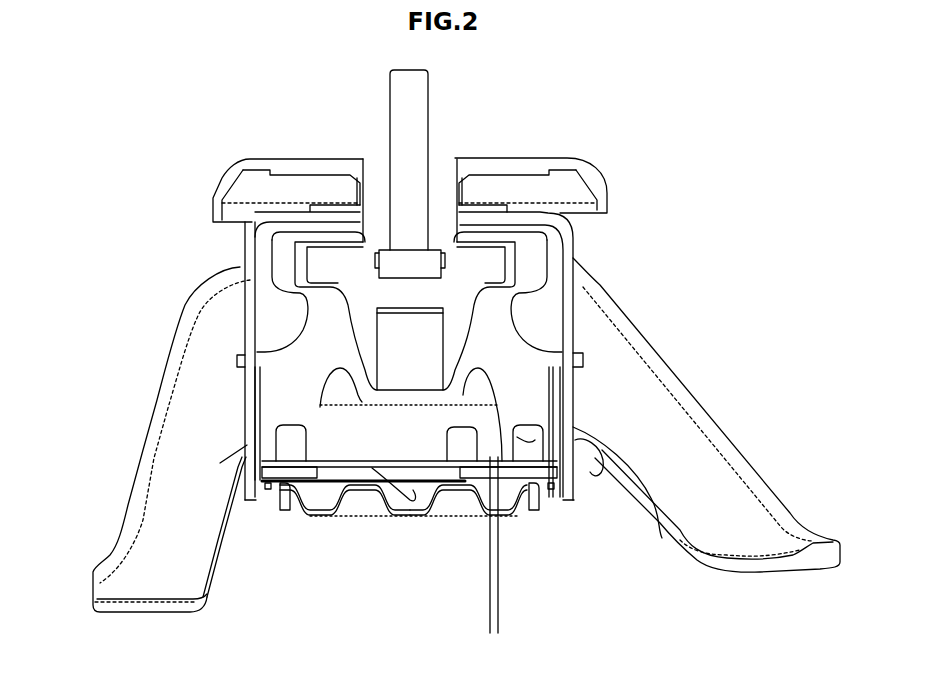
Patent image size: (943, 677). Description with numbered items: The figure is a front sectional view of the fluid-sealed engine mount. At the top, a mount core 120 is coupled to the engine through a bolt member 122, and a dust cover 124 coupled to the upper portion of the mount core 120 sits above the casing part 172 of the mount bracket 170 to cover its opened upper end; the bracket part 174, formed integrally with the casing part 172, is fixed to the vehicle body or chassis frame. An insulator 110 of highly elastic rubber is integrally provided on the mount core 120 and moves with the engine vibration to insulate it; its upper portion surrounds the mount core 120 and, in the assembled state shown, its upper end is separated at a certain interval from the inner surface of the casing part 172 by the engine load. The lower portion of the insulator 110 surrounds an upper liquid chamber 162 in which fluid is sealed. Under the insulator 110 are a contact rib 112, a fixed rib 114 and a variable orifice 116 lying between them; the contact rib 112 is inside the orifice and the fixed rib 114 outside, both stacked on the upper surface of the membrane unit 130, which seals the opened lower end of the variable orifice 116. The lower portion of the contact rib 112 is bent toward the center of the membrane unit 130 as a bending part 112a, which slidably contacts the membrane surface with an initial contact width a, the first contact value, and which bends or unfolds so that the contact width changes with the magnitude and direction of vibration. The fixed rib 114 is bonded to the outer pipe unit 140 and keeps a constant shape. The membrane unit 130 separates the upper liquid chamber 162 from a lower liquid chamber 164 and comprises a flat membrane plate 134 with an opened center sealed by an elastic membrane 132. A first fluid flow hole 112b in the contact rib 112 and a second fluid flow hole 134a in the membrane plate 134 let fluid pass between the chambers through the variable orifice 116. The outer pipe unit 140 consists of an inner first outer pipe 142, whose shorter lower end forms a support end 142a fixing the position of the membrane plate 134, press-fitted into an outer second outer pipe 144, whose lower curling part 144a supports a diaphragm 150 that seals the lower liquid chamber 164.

The insulator 110 is at (528, 310).
The contact rib 112 is at (290, 505).
The bending part 112a is at (312, 445).
The first fluid flow hole 112b is at (510, 358).
The fixed rib 114 is at (247, 447).
The variable orifice 116 is at (508, 485).
The mount core 120 is at (502, 258).
The bolt member 122 is at (420, 106).
The dust cover 124 is at (304, 158).
The membrane unit 130 is at (383, 583).
The membrane 132 is at (428, 507).
The membrane plate 134 is at (473, 487).
The second fluid flow hole 134a is at (520, 482).
The outer pipe unit 140 is at (700, 415).
The first outer pipe 142 is at (560, 388).
The support end 142a is at (560, 482).
The second outer pipe 144 is at (560, 430).
The curling part 144a is at (565, 507).
The diaphragm 150 is at (383, 512).
The upper liquid chamber 162 is at (367, 387).
The lower liquid chamber 164 is at (403, 406).
The mount bracket 170 is at (138, 439).
The casing part 172 is at (250, 392).
The bracket part 174 is at (137, 473).
The initial contact width a is at (457, 627).